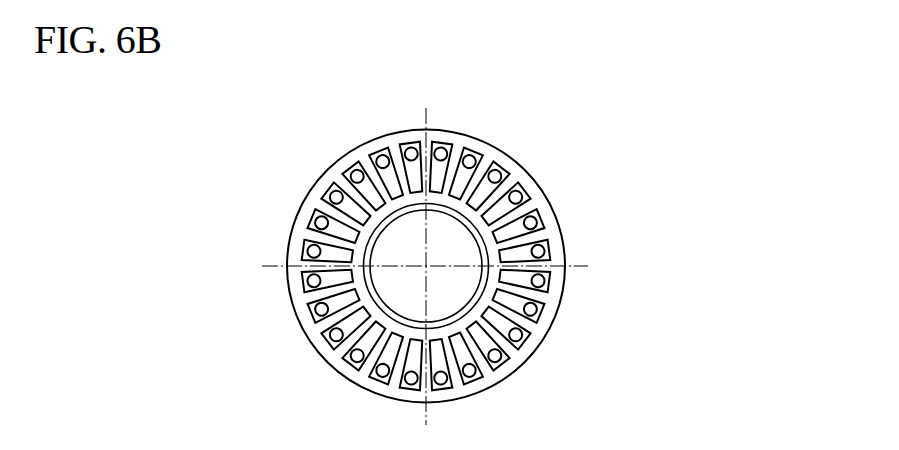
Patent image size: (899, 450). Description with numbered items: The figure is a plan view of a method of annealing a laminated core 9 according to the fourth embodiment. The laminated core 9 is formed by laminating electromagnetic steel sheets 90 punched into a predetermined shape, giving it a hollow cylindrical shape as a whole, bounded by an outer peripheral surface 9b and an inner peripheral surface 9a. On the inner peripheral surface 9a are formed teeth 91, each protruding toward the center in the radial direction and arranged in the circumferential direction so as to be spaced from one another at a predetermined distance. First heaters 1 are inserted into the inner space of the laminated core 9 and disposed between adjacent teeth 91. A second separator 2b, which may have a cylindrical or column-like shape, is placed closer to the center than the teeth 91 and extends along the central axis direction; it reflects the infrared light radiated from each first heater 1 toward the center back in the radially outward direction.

The laminated core 9 is at (573, 162).
The inner peripheral surface 9a is at (470, 162).
The outer peripheral surface 9b is at (562, 236).
The first heater 1 is at (330, 198).
The second separator 2b is at (368, 292).
The electromagnetic steel sheet 90 is at (358, 386).
The tooth 91 is at (497, 332).